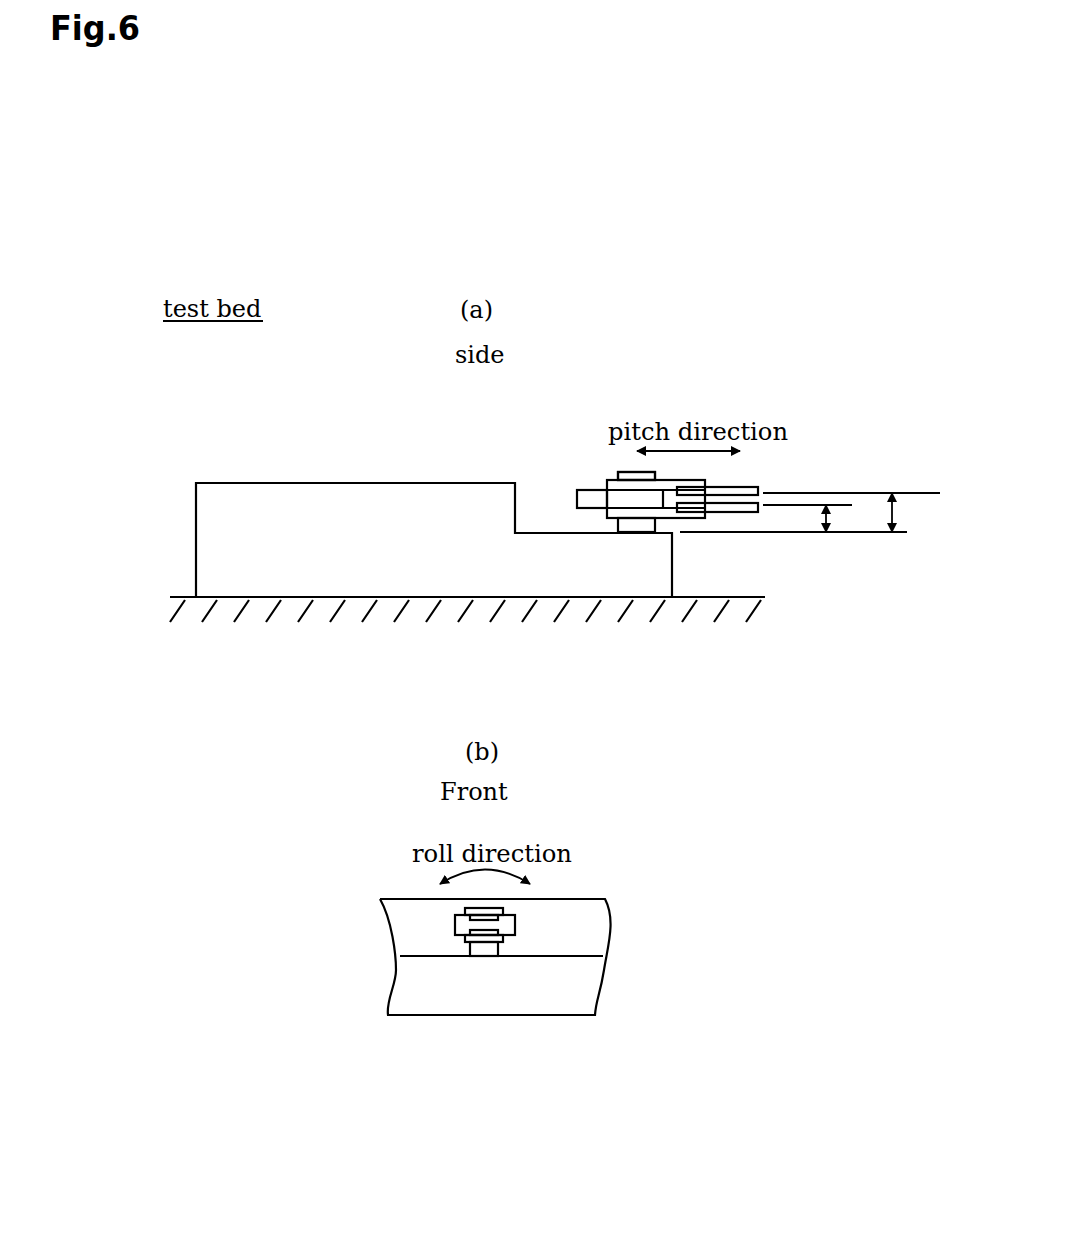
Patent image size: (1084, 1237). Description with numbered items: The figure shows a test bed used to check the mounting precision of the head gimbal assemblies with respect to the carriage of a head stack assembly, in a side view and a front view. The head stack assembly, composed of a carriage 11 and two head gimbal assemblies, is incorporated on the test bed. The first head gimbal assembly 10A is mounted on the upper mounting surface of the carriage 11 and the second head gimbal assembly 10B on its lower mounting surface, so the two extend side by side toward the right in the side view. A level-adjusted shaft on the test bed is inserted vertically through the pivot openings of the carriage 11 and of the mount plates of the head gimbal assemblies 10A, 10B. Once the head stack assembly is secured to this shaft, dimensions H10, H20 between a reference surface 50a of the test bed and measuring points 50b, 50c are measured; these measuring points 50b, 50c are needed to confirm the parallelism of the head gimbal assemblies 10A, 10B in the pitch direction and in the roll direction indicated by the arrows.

The carriage 11 is at (577, 498).
The first head gimbal assembly 10A is at (727, 487).
The second head gimbal assembly 10B is at (730, 513).
The reference surface 50a is at (872, 532).
The measuring point 50b is at (926, 493).
The measuring point 50c is at (793, 505).
The dimension H10 is at (893, 512).
The dimension H20 is at (828, 520).